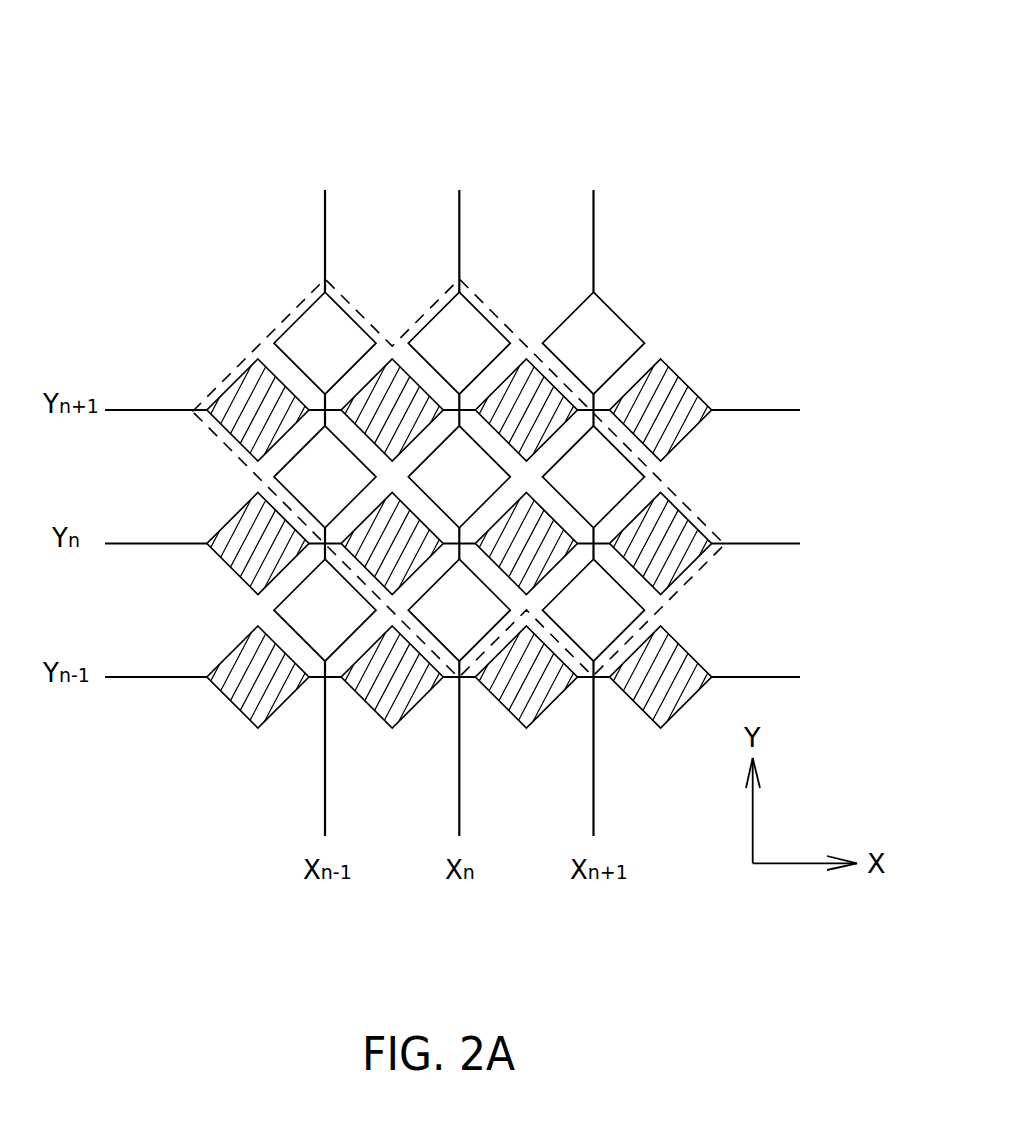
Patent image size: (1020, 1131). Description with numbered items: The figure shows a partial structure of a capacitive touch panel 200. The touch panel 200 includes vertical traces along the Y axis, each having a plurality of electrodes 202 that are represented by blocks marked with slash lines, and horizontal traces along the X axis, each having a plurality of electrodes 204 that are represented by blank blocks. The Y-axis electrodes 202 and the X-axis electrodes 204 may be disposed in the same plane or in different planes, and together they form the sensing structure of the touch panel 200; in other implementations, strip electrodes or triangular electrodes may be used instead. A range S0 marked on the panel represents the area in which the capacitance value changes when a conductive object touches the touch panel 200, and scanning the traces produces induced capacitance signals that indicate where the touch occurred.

The capacitive touch panel 200 is at (702, 90).
The electrodes 202 is at (682, 390).
The electrodes 204 is at (622, 328).
The range S0 is at (685, 582).